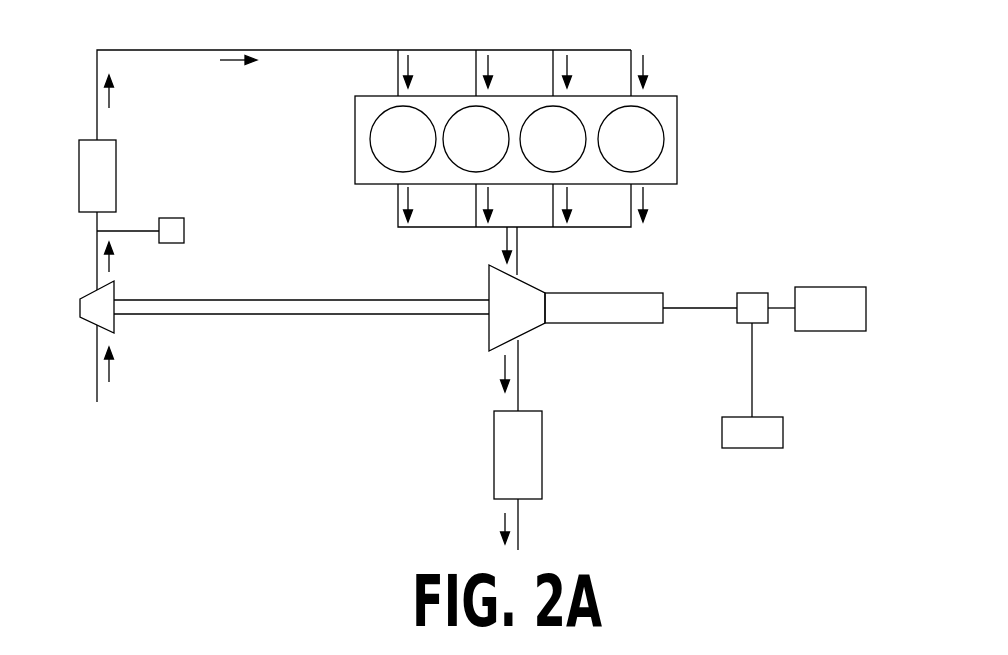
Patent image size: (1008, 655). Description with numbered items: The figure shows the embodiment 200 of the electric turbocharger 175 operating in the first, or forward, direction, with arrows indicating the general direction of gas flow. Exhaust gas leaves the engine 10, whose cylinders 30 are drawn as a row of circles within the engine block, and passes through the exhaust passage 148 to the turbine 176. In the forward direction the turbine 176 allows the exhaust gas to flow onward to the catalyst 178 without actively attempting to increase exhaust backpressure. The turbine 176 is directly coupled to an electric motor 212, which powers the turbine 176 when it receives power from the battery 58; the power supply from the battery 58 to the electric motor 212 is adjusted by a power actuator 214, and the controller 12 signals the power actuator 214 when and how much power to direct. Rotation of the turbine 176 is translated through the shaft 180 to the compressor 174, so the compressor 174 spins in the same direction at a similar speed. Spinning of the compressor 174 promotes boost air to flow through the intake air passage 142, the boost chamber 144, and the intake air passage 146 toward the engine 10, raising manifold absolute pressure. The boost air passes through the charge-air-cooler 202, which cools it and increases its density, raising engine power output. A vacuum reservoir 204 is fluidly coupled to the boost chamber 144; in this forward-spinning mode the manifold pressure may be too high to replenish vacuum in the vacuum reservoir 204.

The embodiment 200 is at (814, 48).
The engine 10 is at (354, 140).
The cylinder 30 is at (667, 128).
The intake air passage 146 is at (257, 50).
The charge-air-cooler 202 is at (142, 148).
The vacuum reservoir 204 is at (168, 218).
The boost chamber 144 is at (97, 254).
The compressor 174 is at (113, 283).
The intake air passage 142 is at (97, 367).
The shaft 180 is at (245, 300).
The turbine 176 is at (489, 283).
The exhaust passage 148 is at (517, 250).
The turbocharger 175 is at (397, 383).
The catalyst 178 is at (542, 411).
The electric motor 212 is at (605, 293).
The power actuator 214 is at (752, 293).
The battery 58 is at (828, 287).
The controller 12 is at (764, 445).